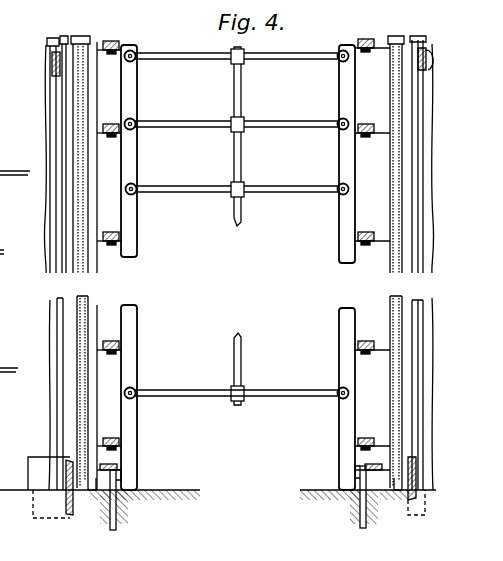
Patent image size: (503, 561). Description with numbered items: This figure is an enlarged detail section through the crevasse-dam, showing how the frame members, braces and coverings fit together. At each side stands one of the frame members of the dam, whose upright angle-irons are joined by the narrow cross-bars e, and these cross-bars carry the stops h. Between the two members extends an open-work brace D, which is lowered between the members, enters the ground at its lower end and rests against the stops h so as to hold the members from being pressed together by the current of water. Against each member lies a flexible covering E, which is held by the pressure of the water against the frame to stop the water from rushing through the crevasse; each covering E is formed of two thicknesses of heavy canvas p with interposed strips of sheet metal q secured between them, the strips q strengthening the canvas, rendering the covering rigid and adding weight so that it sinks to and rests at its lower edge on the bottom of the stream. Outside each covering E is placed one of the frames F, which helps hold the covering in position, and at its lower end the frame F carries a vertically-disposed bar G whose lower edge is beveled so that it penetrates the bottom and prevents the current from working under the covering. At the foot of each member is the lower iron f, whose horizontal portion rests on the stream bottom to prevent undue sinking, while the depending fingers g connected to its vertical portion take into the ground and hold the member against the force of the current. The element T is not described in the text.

The track T is at (15, 212).
The heavy canvas p is at (75, 93).
The stops h is at (118, 134).
The open-work braces D is at (258, 96).
The flexible coverings E is at (76, 181).
The frames F is at (60, 215).
The cross-bars e is at (102, 242).
The strips of sheet metal q is at (82, 395).
The lower iron f is at (116, 464).
The depending fingers g is at (106, 516).
The vertically-disposed bars G is at (43, 473).